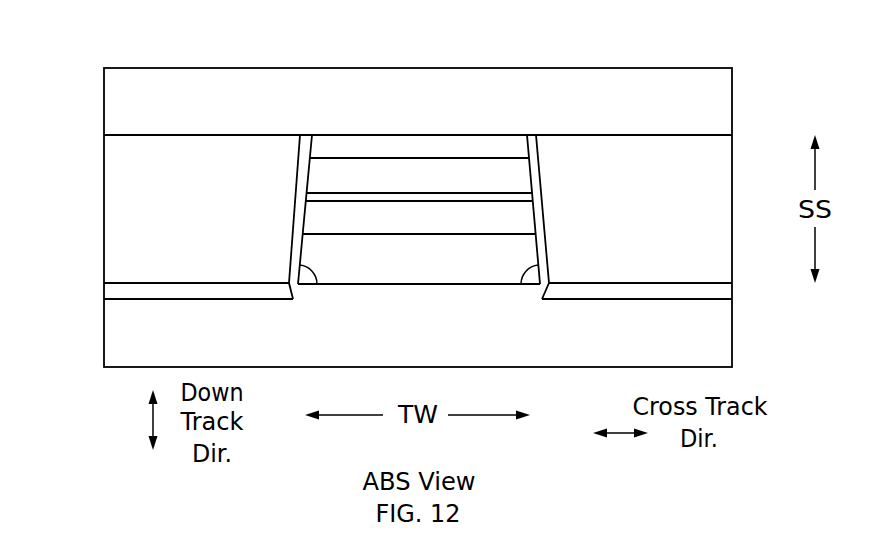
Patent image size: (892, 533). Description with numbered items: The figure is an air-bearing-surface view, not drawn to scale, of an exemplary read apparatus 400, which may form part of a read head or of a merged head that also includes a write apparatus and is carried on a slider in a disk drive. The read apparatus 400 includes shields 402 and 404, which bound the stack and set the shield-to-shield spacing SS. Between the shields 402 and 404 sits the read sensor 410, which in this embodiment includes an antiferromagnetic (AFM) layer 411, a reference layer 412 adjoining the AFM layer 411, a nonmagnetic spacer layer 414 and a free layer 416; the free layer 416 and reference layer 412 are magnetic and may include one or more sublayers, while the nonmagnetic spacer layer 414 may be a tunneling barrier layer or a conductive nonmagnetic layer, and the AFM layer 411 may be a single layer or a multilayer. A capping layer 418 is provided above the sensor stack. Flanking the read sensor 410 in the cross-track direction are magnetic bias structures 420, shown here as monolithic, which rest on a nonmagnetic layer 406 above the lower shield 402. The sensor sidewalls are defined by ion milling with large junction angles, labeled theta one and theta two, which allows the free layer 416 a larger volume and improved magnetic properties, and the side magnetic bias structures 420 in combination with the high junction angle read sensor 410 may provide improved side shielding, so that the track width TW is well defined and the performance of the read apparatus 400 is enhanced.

The read apparatus 400 is at (440, 31).
The shield 402 is at (418, 324).
The shield 404 is at (418, 105).
The nonmagnetic layer 406 is at (103, 288).
The read sensor 410 is at (487, 318).
The antiferromagnetic layer 411 is at (419, 267).
The reference layer 412 is at (419, 217).
The nonmagnetic spacer layer 414 is at (541, 196).
The free layer 416 is at (420, 177).
The capping layer 418 is at (419, 146).
The magnetic bias structures 420 is at (418, 209).